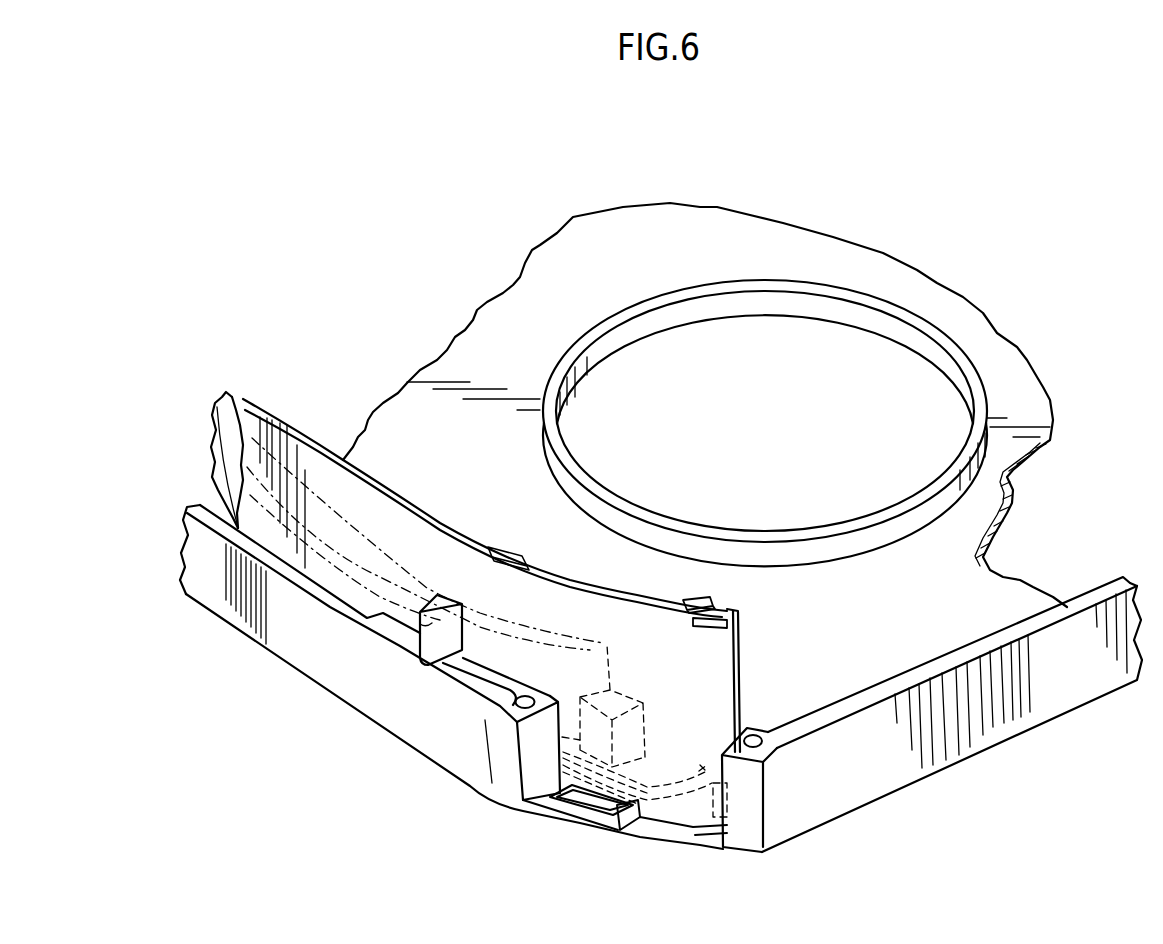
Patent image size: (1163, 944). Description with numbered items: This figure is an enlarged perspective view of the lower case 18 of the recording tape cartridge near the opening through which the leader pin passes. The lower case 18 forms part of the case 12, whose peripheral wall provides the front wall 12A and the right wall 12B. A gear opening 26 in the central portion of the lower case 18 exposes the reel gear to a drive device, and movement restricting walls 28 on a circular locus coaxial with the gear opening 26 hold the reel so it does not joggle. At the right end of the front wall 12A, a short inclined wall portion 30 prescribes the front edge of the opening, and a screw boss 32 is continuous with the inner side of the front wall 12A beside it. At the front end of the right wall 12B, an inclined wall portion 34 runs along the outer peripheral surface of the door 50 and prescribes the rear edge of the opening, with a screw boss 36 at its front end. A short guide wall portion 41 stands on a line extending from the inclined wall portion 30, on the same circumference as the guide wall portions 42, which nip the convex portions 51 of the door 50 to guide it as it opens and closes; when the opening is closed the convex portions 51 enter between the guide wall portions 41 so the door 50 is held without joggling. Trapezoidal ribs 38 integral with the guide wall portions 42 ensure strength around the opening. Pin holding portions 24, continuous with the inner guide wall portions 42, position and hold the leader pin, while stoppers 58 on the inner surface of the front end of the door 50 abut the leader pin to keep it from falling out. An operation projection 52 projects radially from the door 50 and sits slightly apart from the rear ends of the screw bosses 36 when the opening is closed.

The case 12 is at (883, 168).
The front wall 12A is at (1060, 680).
The right wall 12B is at (357, 673).
The lower case 18 is at (703, 211).
The pin holding portions 24 is at (700, 767).
The gear opening 26 is at (920, 345).
The movement restricting walls 28 is at (237, 395).
The inclined wall portions 30 is at (743, 787).
The screw bosses 32 is at (775, 755).
The inclined wall portions 34 is at (428, 668).
The screw bosses 36 is at (590, 690).
The ribs 38 is at (564, 803).
The guide wall portions 41 is at (690, 822).
The guide wall portions 42 is at (637, 763).
The door 50 is at (452, 552).
The convex portions 51 is at (700, 598).
The operation projection 52 is at (416, 648).
The stoppers 58 is at (722, 612).